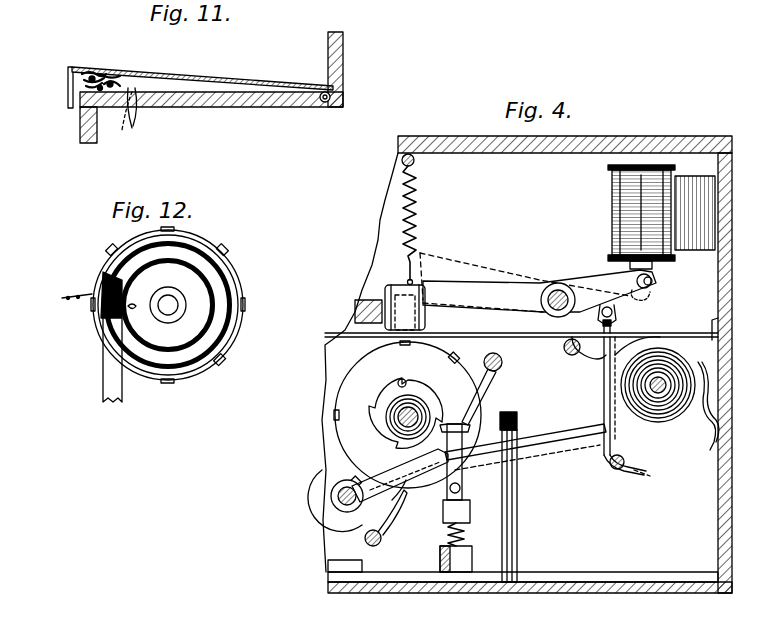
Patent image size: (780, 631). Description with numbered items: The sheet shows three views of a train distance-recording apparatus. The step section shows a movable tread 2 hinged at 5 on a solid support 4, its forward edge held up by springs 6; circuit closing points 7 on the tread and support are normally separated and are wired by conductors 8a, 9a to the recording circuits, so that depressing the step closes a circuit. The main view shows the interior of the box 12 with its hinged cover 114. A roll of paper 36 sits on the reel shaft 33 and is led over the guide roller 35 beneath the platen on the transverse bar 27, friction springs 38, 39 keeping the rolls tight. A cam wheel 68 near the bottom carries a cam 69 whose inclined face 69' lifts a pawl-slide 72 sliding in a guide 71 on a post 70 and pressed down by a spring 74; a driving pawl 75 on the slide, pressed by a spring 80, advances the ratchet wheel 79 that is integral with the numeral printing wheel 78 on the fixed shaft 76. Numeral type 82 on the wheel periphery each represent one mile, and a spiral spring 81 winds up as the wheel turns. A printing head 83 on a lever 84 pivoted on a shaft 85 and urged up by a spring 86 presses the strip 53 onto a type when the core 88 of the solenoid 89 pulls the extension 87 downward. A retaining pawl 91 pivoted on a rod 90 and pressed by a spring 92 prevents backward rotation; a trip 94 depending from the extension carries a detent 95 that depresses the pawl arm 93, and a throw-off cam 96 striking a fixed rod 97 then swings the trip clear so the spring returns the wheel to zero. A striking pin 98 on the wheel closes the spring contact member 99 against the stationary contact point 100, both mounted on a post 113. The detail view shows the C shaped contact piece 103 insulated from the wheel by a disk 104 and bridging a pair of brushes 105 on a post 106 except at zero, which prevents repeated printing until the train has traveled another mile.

In FIG. 11, the movable tread 2 is at (200, 75).
In FIG. 11, the support 4 is at (228, 107).
In FIG. 11, the hinge 5 is at (325, 104).
In FIG. 11, the spring 6 is at (62, 80).
In FIG. 11, the circuit closing point 7 is at (116, 72).
In FIG. 11, the conductor 8a is at (132, 129).
In FIG. 11, the conductor 9a is at (140, 125).
In FIG. 4, the box 12 is at (383, 193).
In FIG. 4, the transverse bar 27 is at (360, 298).
In FIG. 4, the reel shaft 33 is at (652, 395).
In FIG. 4, the paper guide roller 35 is at (586, 333).
In FIG. 4, the roll of paper 36 is at (682, 417).
In FIG. 4, the friction spring 38 is at (676, 340).
In FIG. 4, the friction spring 39 is at (706, 392).
In FIG. 4, the paper strip 53 is at (337, 334).
In FIG. 4, the cam wheel 68 is at (328, 577).
In FIG. 4, the cam 69 is at (495, 597).
In FIG. 4, the inclined face 69' is at (435, 557).
In FIG. 4, the post 70 is at (518, 554).
In FIG. 4, the guide 71 is at (442, 511).
In FIG. 4, the pawl-slide 72 is at (447, 531).
In FIG. 4, the spring 74 is at (517, 531).
In FIG. 4, the driving pawl 75 is at (520, 470).
In FIG. 12, the shaft 76 is at (168, 303).
In FIG. 4, the shaft 76 is at (396, 412).
In FIG. 12, the numeral printing wheel 78 is at (186, 338).
In FIG. 4, the numeral printing wheel 78 is at (336, 432).
In FIG. 4, the ratchet wheel 79 is at (382, 387).
In FIG. 4, the spring 80 is at (498, 370).
In FIG. 4, the spiral spring 81 is at (428, 382).
In FIG. 12, the numeral type 82 is at (225, 251).
In FIG. 4, the numeral type 82 is at (332, 415).
In FIG. 4, the printing head 83 is at (426, 322).
In FIG. 4, the lever 84 is at (480, 285).
In FIG. 4, the shaft 85 is at (558, 283).
In FIG. 4, the spring 86 is at (418, 208).
In FIG. 4, the extension 87 is at (595, 280).
In FIG. 4, the core 88 is at (656, 278).
In FIG. 4, the solenoid 89 is at (610, 191).
In FIG. 4, the rod 90 is at (330, 496).
In FIG. 4, the retaining pawl 91 is at (386, 459).
In FIG. 4, the spring 92 is at (390, 508).
In FIG. 4, the pawl arm 93 is at (547, 430).
In FIG. 4, the trip 94 is at (603, 381).
In FIG. 4, the detent 95 is at (603, 412).
In FIG. 4, the throw-off cam 96 is at (630, 449).
In FIG. 4, the fixed rod 97 is at (616, 469).
In FIG. 4, the striking pin 98 is at (452, 422).
In FIG. 4, the spring contact member 99 is at (502, 412).
In FIG. 4, the stationary contact point 100 is at (515, 413).
In FIG. 12, the C shaped contact piece 103 is at (168, 302).
In FIG. 12, the disk 104 is at (153, 373).
In FIG. 12, the brush 105 is at (92, 312).
In FIG. 12, the post 106 is at (101, 385).
In FIG. 4, the post 113 is at (518, 514).
In FIG. 4, the hinged cover 114 is at (670, 136).